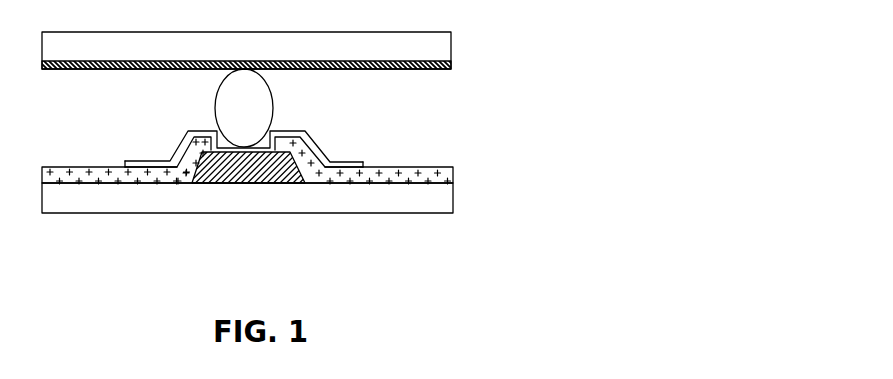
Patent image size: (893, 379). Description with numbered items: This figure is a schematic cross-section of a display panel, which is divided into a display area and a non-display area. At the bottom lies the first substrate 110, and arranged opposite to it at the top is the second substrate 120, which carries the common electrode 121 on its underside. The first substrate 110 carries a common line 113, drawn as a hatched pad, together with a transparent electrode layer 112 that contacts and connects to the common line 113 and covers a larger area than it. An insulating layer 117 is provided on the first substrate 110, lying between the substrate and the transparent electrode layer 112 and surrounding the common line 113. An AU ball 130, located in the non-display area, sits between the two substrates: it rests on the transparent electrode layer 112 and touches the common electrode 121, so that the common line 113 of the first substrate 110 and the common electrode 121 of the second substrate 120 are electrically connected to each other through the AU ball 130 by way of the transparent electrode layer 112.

The first substrate 110 is at (452, 218).
The transparent electrode layer 112 is at (320, 150).
The common line 113 is at (247, 173).
The insulating layer 117 is at (437, 173).
The second substrate 120 is at (437, 48).
The common electrode 121 is at (451, 61).
The AU ball 130 is at (272, 95).